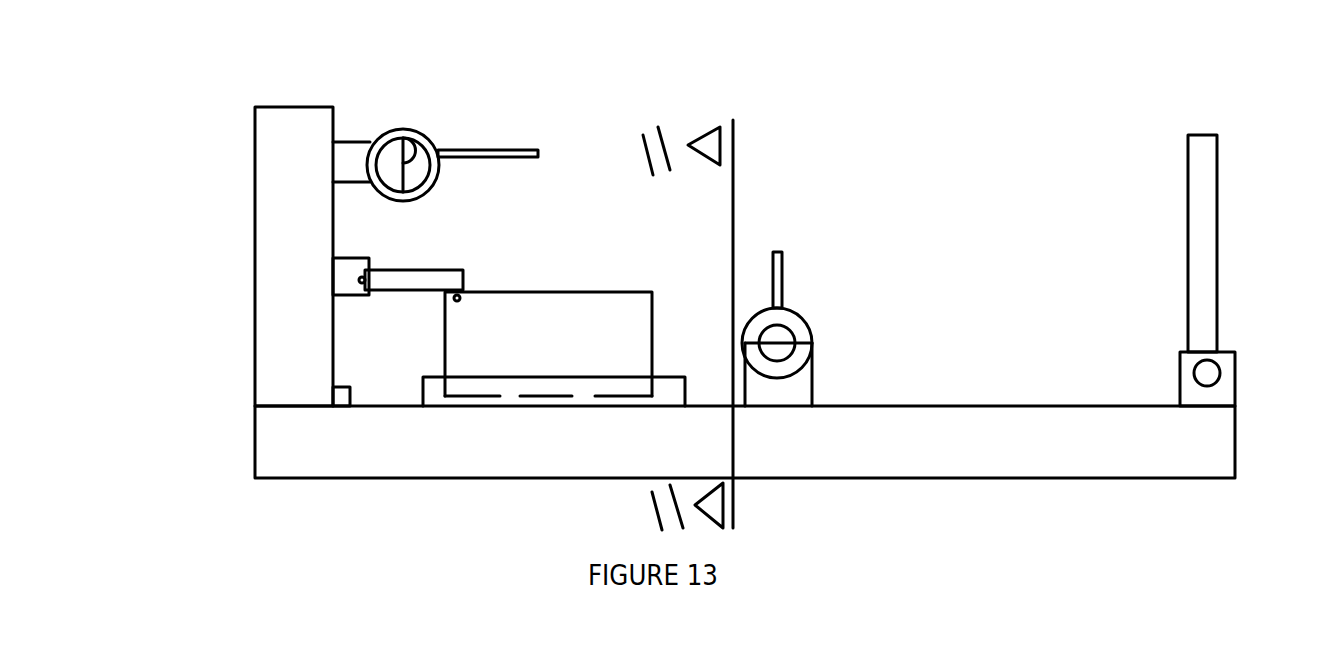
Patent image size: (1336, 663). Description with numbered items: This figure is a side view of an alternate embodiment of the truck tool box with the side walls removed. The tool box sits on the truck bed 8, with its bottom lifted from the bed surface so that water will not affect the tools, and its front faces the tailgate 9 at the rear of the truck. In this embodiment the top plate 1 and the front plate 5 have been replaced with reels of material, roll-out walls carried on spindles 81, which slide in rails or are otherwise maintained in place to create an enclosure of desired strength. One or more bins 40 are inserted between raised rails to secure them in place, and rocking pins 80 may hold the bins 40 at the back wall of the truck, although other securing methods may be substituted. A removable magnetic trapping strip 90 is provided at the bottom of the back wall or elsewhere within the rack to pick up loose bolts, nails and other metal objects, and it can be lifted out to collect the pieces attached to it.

The magnetic trapping strip 90 is at (337, 390).
The truck bed 8 is at (431, 150).
The top plate 1 is at (496, 147).
The rocking pins 80 is at (405, 279).
The bins 40 is at (557, 289).
The front plate 5 is at (783, 267).
The spindles 81 is at (800, 327).
The tailgate 9 is at (1200, 176).